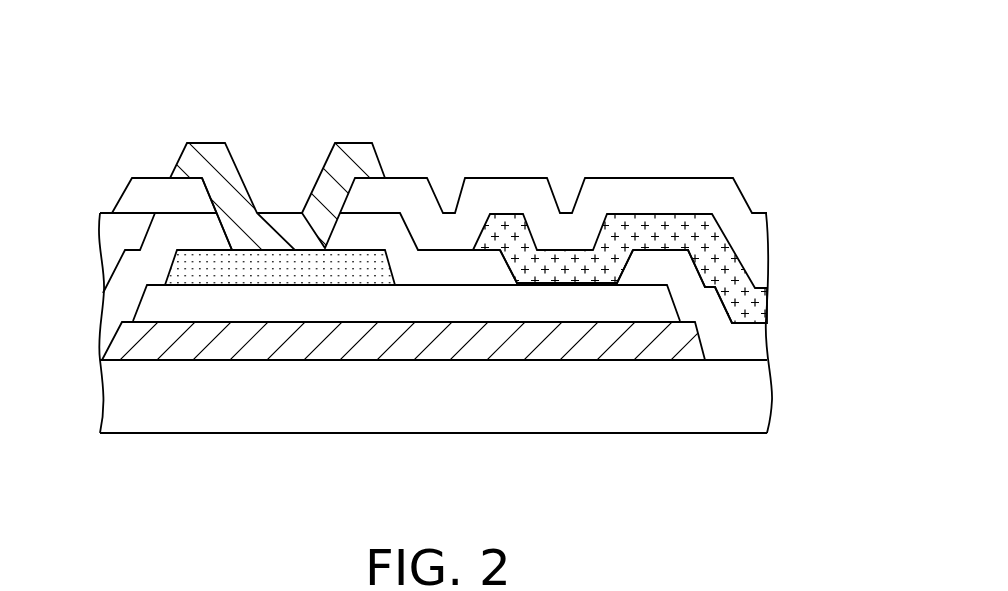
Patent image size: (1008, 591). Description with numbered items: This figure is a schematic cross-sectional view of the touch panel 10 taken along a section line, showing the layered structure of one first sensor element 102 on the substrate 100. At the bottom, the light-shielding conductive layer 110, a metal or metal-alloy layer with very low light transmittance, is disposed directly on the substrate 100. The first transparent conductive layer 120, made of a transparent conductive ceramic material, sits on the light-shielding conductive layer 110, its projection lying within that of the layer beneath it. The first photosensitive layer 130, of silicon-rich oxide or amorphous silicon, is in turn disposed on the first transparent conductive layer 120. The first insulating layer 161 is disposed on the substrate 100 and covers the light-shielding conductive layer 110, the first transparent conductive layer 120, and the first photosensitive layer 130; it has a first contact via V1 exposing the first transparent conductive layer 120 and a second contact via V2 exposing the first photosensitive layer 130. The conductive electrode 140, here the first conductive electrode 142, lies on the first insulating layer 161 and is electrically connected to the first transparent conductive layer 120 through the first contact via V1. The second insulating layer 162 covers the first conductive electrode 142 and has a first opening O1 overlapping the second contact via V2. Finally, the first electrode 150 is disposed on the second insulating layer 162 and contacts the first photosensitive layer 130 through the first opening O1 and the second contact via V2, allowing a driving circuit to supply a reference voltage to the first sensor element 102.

The touch panel 10 is at (855, 488).
The substrate 100 is at (752, 402).
The first sensor element 102 is at (792, 0).
The light-shielding conductive layer 110 is at (140, 342).
The first transparent conductive layer 120 is at (160, 308).
The first photosensitive layer 130 is at (175, 272).
The first electrode 150 is at (206, 165).
The first insulating layer 161 is at (155, 247).
The second insulating layer 162 is at (145, 205).
The conductive electrode 140 is at (675, 268).
The first conductive electrode 142 is at (758, 303).
The first contact via V1 is at (509, 272).
The second contact via V2 is at (223, 228).
The first opening O1 is at (345, 198).